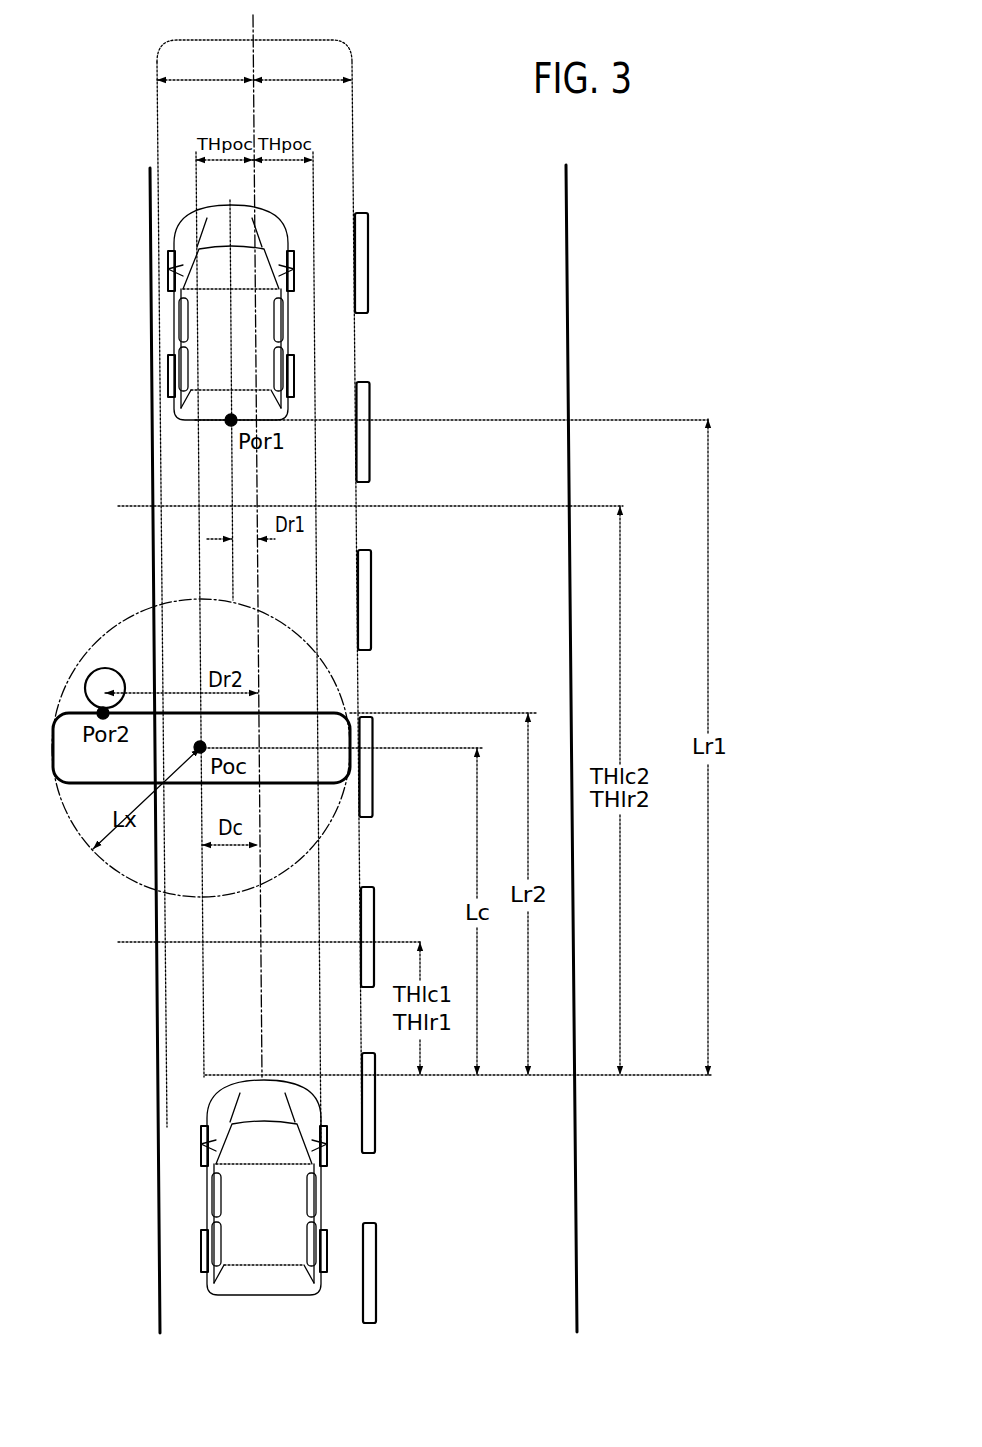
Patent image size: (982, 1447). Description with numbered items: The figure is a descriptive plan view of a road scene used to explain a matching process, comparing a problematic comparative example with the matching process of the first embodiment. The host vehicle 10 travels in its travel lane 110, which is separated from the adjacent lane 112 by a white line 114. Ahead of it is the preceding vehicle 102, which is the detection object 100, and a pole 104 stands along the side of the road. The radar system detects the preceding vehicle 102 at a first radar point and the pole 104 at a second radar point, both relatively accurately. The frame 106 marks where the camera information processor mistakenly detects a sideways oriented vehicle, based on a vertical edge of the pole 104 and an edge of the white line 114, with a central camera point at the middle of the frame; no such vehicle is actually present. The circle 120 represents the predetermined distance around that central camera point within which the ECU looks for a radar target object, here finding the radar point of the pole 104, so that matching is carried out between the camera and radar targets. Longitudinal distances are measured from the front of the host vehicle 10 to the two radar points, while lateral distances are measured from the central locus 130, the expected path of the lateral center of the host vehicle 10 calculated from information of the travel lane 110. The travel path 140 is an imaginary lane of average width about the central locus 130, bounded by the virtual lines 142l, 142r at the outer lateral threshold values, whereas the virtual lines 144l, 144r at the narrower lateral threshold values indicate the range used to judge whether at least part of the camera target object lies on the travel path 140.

The host vehicle 10 is at (235, 1185).
The detection object 100 is at (190, 233).
The preceding vehicle 102 is at (167, 312).
The pole 104 is at (101, 668).
The frame 106 is at (75, 712).
The travel lane 110 is at (172, 1232).
The lane 112 is at (560, 1202).
The white line 114 is at (369, 1258).
The circle 120 is at (110, 867).
The central locus 130 is at (253, 127).
The travel path 140 is at (290, 41).
The line 142l is at (157, 122).
The line 142r is at (352, 113).
The line 144l is at (196, 182).
The line 144r is at (313, 197).